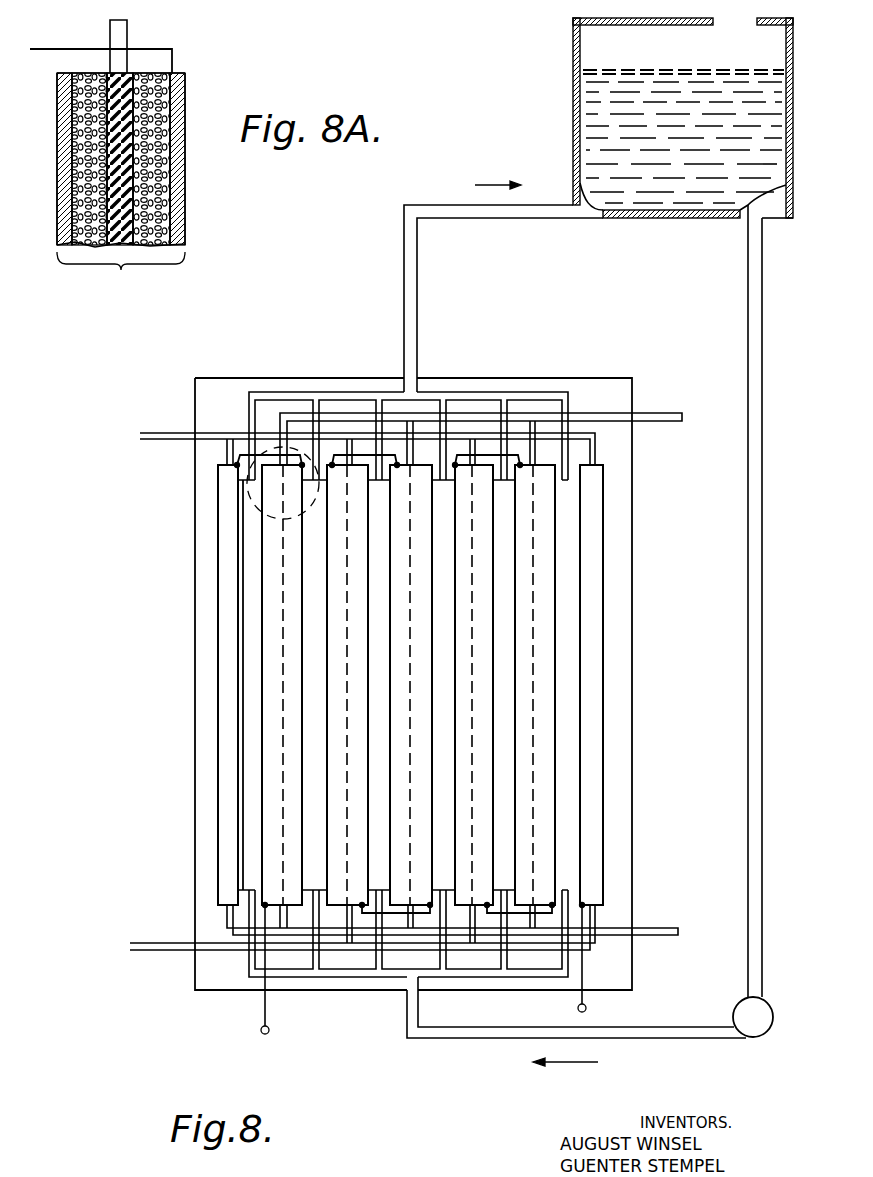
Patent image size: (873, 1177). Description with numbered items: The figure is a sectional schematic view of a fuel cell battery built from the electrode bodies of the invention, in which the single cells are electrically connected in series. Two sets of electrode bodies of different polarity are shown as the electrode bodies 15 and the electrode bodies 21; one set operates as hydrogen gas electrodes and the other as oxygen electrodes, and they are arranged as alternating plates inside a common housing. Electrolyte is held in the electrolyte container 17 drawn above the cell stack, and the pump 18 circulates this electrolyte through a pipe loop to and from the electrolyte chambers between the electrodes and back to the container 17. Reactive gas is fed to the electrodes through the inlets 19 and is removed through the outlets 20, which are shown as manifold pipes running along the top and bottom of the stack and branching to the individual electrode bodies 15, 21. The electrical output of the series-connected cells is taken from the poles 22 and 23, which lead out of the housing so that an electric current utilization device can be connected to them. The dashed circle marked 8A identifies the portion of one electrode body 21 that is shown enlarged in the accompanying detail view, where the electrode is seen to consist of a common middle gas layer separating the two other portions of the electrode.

In FIG. 8, the electrode body 15 is at (223, 613).
In FIG. 8, the electrolyte container 17 is at (778, 203).
In FIG. 8, the pump 18 is at (767, 1033).
In FIG. 8, the gas inlet 19 is at (115, 437).
In FIG. 8, the gas outlet 20 is at (720, 420).
In FIG. 8A, the electrode body 21 is at (107, 162).
In FIG. 8, the electrode body 21 is at (270, 653).
In FIG. 8, the pole 22 is at (269, 1032).
In FIG. 8, the pole 23 is at (586, 1009).
In FIG. 8, the enlarged section of electrode 8A is at (236, 514).